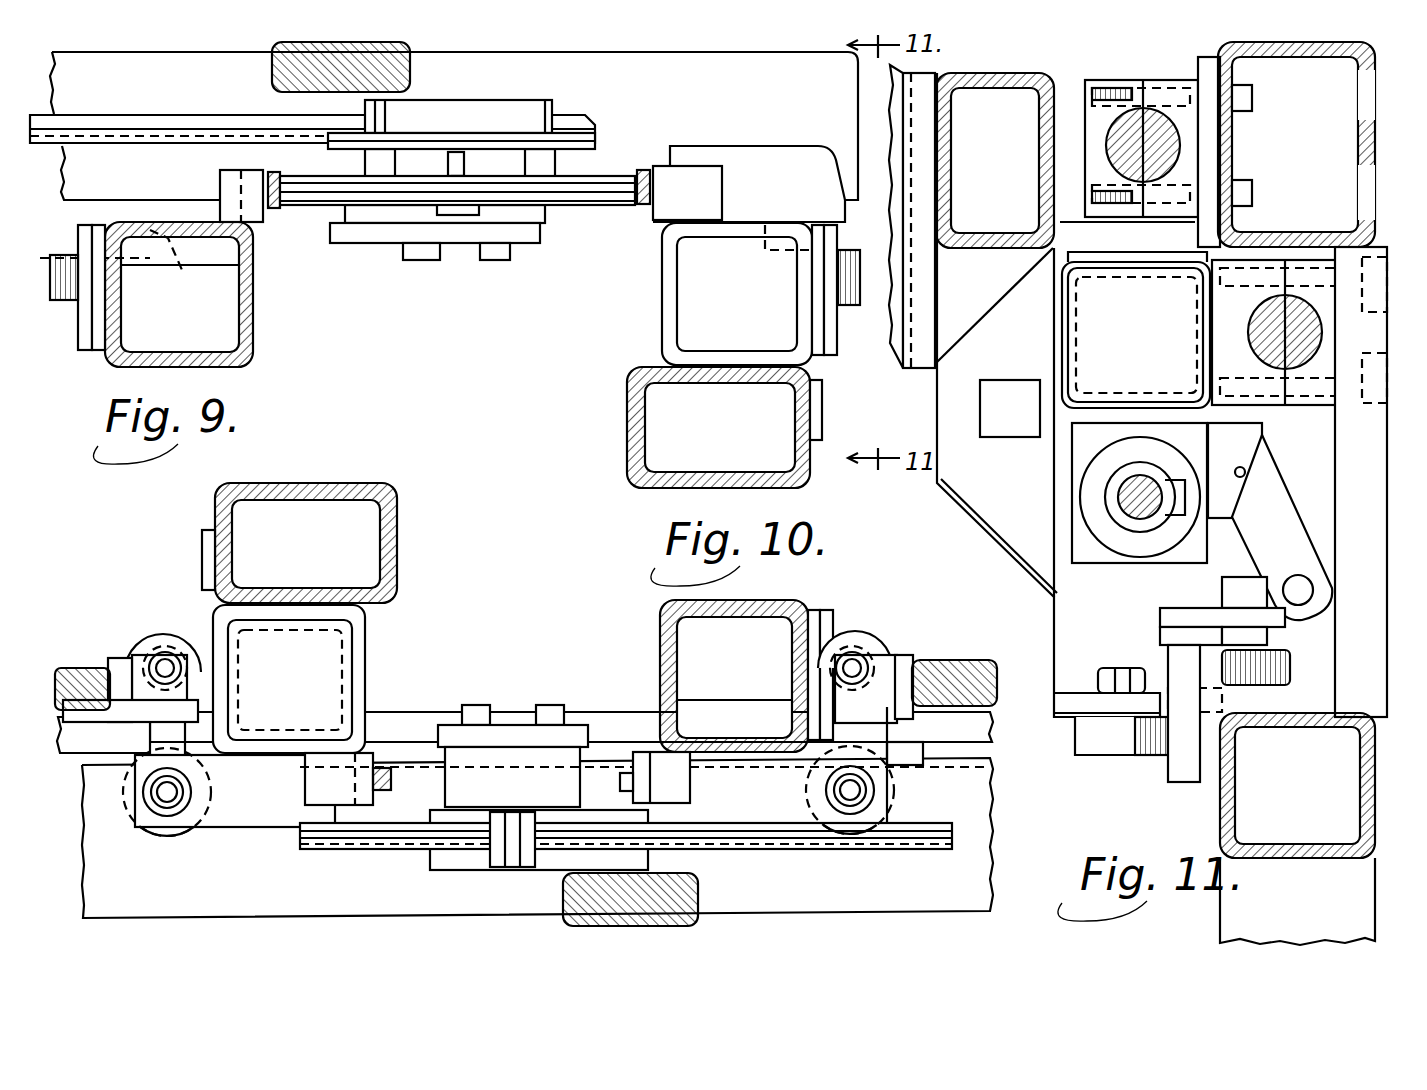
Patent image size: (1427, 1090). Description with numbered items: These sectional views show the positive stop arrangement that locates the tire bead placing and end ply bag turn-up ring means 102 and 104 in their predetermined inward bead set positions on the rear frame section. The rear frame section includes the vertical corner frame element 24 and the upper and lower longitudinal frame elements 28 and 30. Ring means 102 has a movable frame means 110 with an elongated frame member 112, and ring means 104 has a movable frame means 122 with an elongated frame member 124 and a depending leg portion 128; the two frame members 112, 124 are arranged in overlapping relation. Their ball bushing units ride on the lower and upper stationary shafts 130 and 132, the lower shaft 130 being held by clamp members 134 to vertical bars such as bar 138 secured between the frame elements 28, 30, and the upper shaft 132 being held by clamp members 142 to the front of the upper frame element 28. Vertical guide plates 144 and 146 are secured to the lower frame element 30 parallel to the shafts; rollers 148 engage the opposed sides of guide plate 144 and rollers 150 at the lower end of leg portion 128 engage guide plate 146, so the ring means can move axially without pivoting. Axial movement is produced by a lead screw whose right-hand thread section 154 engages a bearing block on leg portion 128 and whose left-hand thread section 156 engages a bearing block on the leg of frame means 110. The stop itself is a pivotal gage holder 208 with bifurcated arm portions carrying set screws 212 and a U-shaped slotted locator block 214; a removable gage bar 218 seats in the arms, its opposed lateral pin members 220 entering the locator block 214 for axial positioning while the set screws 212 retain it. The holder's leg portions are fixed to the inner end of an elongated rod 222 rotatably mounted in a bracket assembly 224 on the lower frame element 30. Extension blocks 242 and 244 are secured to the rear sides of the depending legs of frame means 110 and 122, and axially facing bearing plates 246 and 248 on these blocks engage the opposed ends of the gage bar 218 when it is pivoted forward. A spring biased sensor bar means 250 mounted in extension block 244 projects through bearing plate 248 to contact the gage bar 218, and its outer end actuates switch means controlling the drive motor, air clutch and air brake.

In FIG. 11, the vertical corner frame element 24 is at (1232, 893).
In FIG. 11, the upper longitudinal frame element 28 is at (1368, 55).
In FIG. 9, the lower longitudinal frame element 30 is at (573, 62).
In FIG. 10, the lower longitudinal frame element 30 is at (412, 910).
In FIG. 11, the lower longitudinal frame element 30 is at (1370, 818).
In FIG. 9, the tire bead placing and end ply bag turn-up ring means 102 is at (263, 330).
In FIG. 10, the tire bead placing and end ply bag turn-up ring means 102 is at (801, 600).
In FIG. 9, the tire bead placing and end ply bag turn-up ring means 104 is at (619, 371).
In FIG. 10, the tire bead placing and end ply bag turn-up ring means 104 is at (406, 513).
In FIG. 11, the tire bead placing and end ply bag turn-up ring means 104 is at (923, 421).
In FIG. 11, the movable frame means 110 is at (1062, 350).
In FIG. 11, the elongated frame member 112 is at (1066, 322).
In FIG. 11, the movable frame means 122 is at (1040, 73).
In FIG. 11, the elongated frame member 124 is at (988, 72).
In FIG. 11, the depending leg portion 128 is at (1058, 632).
In FIG. 11, the lower stationary shaft 130 is at (1255, 335).
In FIG. 11, the upper stationary shaft 132 is at (1165, 150).
In FIG. 11, the clamp members 134 is at (1308, 405).
In FIG. 9, the vertical bar 138 is at (272, 67).
In FIG. 10, the vertical bar 138 is at (685, 893).
In FIG. 11, the vertical bar 138 is at (1385, 545).
In FIG. 11, the clamp members 142 is at (1152, 78).
In FIG. 9, the vertical guide plate 144 is at (146, 294).
In FIG. 10, the vertical guide plate 144 is at (990, 738).
In FIG. 9, the vertical guide plate 146 is at (772, 255).
In FIG. 10, the vertical guide plate 146 is at (75, 742).
In FIG. 11, the vertical guide plate 146 is at (1176, 784).
In FIG. 10, the rollers 148 is at (870, 635).
In FIG. 10, the rollers 150 is at (150, 635).
In FIG. 11, the rollers 150 is at (1237, 675).
In FIG. 10, the right-hand thread section 154 is at (65, 668).
In FIG. 11, the right-hand thread section 154 is at (1140, 505).
In FIG. 10, the left-hand thread section 156 is at (940, 668).
In FIG. 9, the pivotal gage holder 208 is at (602, 135).
In FIG. 10, the pivotal gage holder 208 is at (378, 765).
In FIG. 11, the pivotal gage holder 208 is at (1312, 524).
In FIG. 9, the set screws 212 is at (380, 212).
In FIG. 10, the set screws 212 is at (443, 785).
In FIG. 9, the locator block 214 is at (442, 180).
In FIG. 10, the locator block 214 is at (500, 866).
In FIG. 9, the gage member or bar 218 is at (605, 205).
In FIG. 10, the gage member or bar 218 is at (340, 845).
In FIG. 9, the lateral pin members 220 is at (458, 160).
In FIG. 10, the lateral pin members 220 is at (513, 866).
In FIG. 9, the elongated rod 222 is at (152, 120).
In FIG. 10, the elongated rod 222 is at (912, 850).
In FIG. 11, the elongated rod 222 is at (1305, 592).
In FIG. 9, the bracket assembly 224 is at (393, 227).
In FIG. 9, the extension block 242 is at (220, 188).
In FIG. 10, the extension block 242 is at (690, 790).
In FIG. 9, the extension block 244 is at (708, 190).
In FIG. 10, the extension block 244 is at (310, 788).
In FIG. 11, the extension block 244 is at (1250, 499).
In FIG. 9, the bearing plate 246 is at (274, 210).
In FIG. 10, the bearing plate 246 is at (625, 760).
In FIG. 9, the bearing plate 248 is at (643, 170).
In FIG. 10, the bearing plate 248 is at (382, 779).
In FIG. 9, the spring biased sensor bar means 250 is at (629, 205).
In FIG. 11, the spring biased sensor bar means 250 is at (1251, 466).